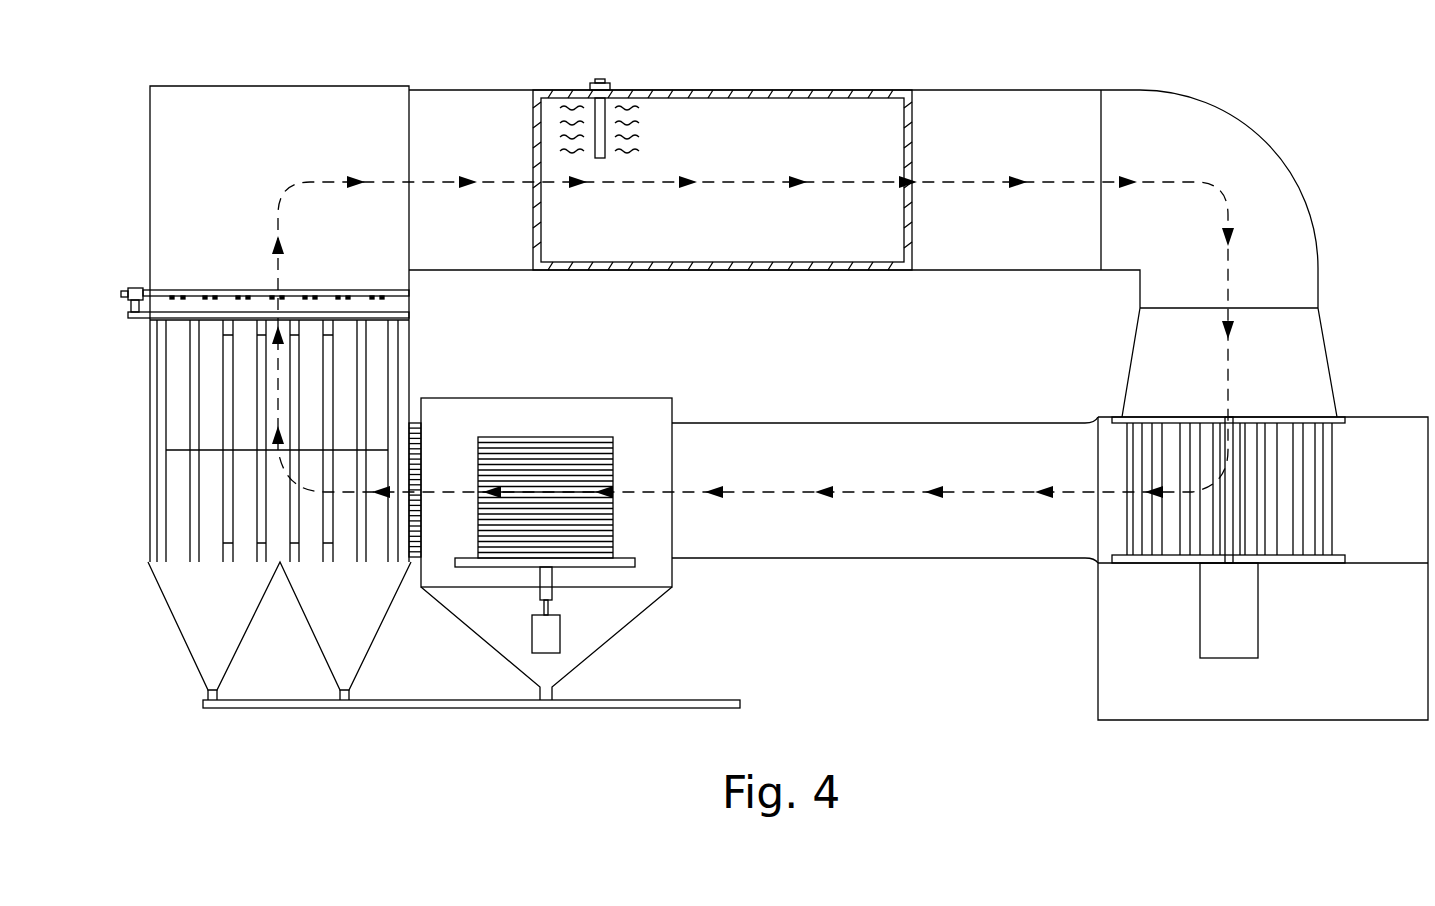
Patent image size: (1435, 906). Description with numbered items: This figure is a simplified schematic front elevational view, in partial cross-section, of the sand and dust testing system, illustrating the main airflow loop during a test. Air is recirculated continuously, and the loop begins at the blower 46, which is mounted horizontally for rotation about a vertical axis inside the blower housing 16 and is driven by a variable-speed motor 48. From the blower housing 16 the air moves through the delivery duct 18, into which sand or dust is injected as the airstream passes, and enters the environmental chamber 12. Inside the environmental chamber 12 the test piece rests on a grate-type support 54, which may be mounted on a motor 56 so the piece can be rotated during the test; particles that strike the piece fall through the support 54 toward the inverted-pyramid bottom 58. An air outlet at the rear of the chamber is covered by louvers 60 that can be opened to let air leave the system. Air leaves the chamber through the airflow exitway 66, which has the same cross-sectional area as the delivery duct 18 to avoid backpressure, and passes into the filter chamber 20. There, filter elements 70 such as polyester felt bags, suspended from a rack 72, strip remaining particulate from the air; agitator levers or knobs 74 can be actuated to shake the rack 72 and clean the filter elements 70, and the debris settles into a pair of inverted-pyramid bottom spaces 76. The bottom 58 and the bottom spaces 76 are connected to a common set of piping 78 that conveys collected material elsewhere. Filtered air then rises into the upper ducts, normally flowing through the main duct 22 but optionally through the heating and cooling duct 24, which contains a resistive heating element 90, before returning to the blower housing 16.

The environmental chamber 12 is at (620, 402).
The blower housing 16 is at (1392, 415).
The delivery duct 18 is at (940, 548).
The filter chamber 20 is at (175, 381).
The main duct 22 is at (468, 100).
The heating and cooling duct 24 is at (748, 108).
The blower 46 is at (1315, 468).
The motor 48 is at (1205, 612).
The support 54 is at (463, 557).
The motor 56 is at (560, 628).
The bottom 58 is at (488, 644).
The louvers 60 is at (538, 450).
The airflow exitway 66 is at (413, 423).
The filter elements 70 is at (158, 478).
The rack 72 is at (205, 290).
The agitator levers or knobs 74 is at (133, 288).
The bottom spaces 76 is at (183, 607).
The piping 78 is at (448, 710).
The heating element 90 is at (600, 108).